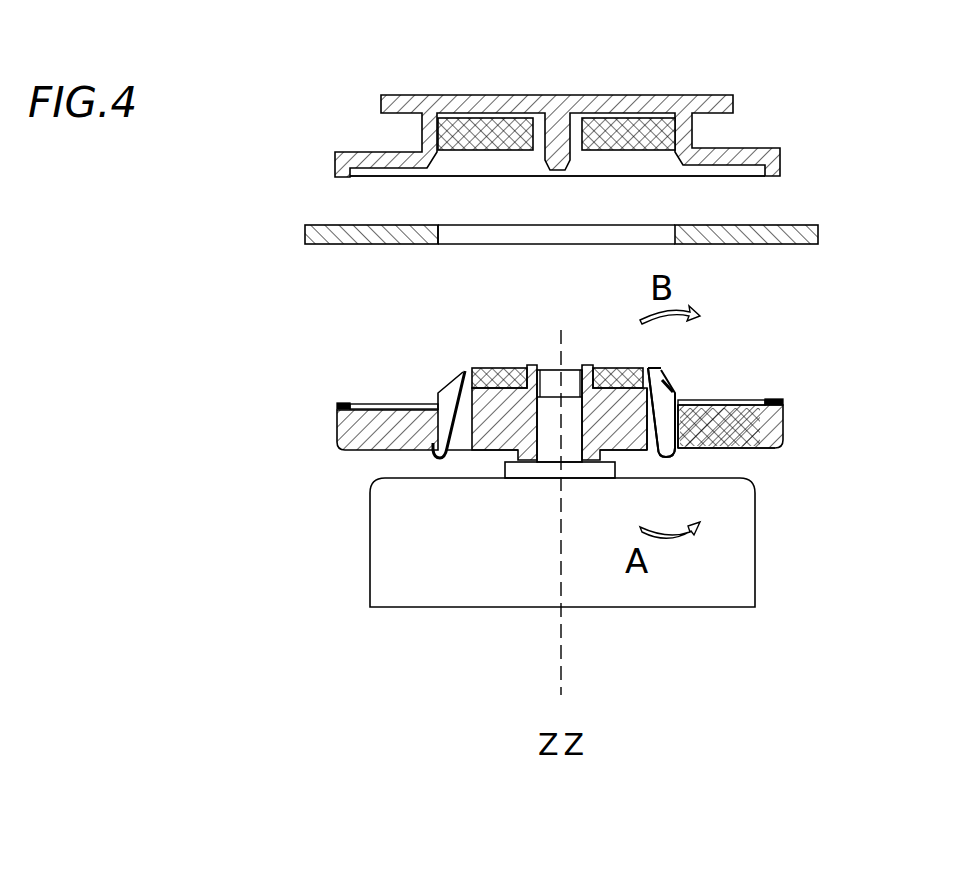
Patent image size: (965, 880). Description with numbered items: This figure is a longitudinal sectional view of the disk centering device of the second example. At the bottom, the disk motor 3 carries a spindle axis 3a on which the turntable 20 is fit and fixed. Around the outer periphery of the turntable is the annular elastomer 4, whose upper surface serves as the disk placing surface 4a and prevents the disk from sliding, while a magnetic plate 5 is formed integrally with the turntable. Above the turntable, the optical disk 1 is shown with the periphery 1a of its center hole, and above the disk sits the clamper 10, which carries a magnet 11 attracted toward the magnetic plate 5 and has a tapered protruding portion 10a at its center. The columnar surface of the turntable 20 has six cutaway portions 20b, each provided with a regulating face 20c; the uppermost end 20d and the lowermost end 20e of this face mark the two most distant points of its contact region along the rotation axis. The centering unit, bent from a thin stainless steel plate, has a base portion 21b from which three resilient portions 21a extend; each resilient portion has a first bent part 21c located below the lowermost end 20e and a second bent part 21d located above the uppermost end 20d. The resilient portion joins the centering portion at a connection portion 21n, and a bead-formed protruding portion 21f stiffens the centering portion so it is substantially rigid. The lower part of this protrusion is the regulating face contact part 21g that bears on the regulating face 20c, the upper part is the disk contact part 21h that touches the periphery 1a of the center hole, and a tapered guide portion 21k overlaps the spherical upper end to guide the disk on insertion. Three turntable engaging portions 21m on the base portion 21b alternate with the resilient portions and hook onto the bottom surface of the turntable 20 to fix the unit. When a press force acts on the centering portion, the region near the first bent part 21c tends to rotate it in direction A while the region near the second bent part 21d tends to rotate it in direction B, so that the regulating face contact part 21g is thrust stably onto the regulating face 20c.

The clamper 10 is at (335, 160).
The magnet 11 is at (678, 128).
The protruding portion 10a is at (583, 175).
The optical disk 1 is at (323, 226).
The periphery of the center hole 1a is at (443, 248).
The elastomer 4 is at (337, 410).
The disk placing surface 4a is at (347, 403).
The magnetic plate 5 is at (470, 369).
The turntable 20 is at (350, 459).
The cutaway portions 20b is at (455, 451).
The regulating face 20c is at (690, 452).
The uppermost end of the regulating face 20d is at (780, 444).
The lowermost end of the regulating face 20e is at (680, 453).
The resilient portion 21a is at (660, 452).
The base portion 21b is at (612, 374).
The first bent part 21c is at (663, 456).
The second bent part 21d is at (654, 368).
The protruding portion 21f is at (740, 449).
The regulating face contact part 21g is at (705, 450).
The disk contact part 21h is at (783, 412).
The guide portion 21k is at (680, 385).
The turntable engaging portions 21m is at (432, 447).
The connection portion 21n is at (670, 456).
The disk motor 3 is at (388, 588).
The spindle axis 3a is at (547, 445).